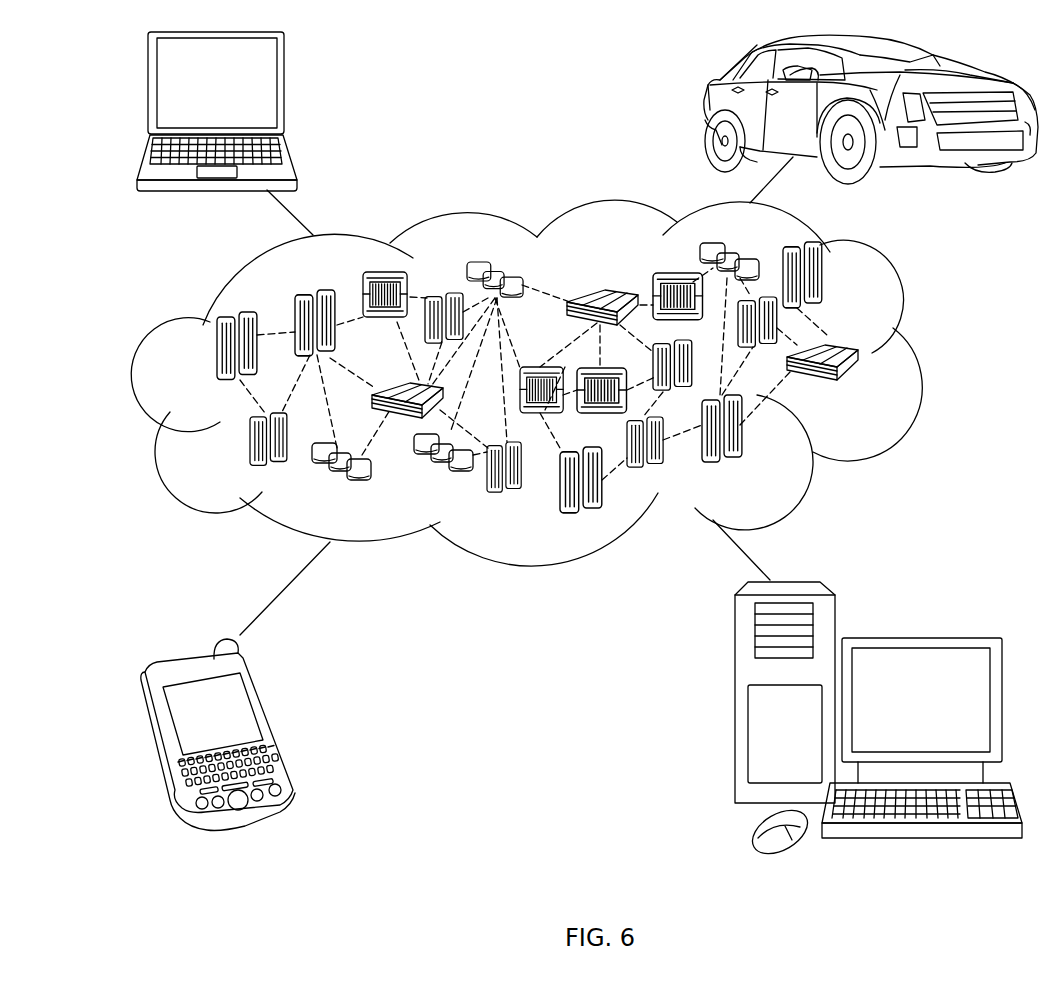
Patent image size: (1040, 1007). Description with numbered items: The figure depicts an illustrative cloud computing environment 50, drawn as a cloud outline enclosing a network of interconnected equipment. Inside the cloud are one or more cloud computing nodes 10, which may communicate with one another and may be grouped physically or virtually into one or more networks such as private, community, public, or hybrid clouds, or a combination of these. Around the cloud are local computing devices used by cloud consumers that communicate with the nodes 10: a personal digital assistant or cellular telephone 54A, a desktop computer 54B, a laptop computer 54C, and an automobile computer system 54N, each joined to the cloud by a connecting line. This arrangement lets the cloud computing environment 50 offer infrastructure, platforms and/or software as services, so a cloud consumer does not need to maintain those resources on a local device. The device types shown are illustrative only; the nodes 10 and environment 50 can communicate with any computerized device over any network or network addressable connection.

The cloud computing nodes 10 is at (860, 387).
The cloud computing environment 50 is at (917, 362).
The personal digital assistant or cellular telephone 54A is at (283, 728).
The desktop computer 54B is at (917, 638).
The laptop computer 54C is at (285, 92).
The automobile computer system 54N is at (708, 109).